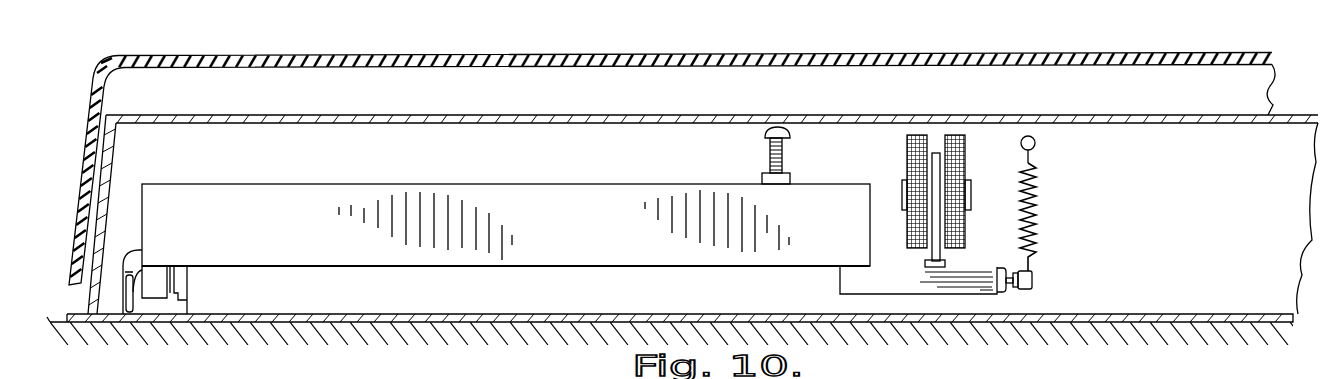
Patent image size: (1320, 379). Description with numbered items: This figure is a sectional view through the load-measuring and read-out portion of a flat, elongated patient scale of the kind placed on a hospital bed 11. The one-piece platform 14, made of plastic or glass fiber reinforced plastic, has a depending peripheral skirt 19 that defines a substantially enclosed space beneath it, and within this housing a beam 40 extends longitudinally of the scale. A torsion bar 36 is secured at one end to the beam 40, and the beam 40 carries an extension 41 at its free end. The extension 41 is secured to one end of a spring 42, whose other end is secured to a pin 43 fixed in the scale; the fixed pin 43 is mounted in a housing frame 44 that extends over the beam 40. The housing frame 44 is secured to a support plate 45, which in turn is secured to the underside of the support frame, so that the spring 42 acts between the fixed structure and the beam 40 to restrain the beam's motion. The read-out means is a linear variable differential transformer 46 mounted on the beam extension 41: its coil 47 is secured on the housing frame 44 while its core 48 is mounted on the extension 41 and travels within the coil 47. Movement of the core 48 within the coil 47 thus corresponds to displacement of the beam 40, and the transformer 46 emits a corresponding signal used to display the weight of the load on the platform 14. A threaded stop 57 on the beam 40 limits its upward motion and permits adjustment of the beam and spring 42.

The hospital bed 11 is at (50, 322).
The platform 14 is at (540, 55).
The depending peripheral skirt 19 is at (81, 153).
The torsion bar 36 is at (157, 287).
The beam 40 is at (498, 184).
The extension 41 is at (993, 297).
The spring 42 is at (1038, 228).
The pin 43 is at (1036, 144).
The housing frame 44 is at (462, 115).
The support plate 45 is at (340, 314).
The linear variable differential transformer 46 is at (889, 160).
The coil 47 is at (966, 156).
The core 48 is at (946, 258).
The screw 57 is at (769, 152).